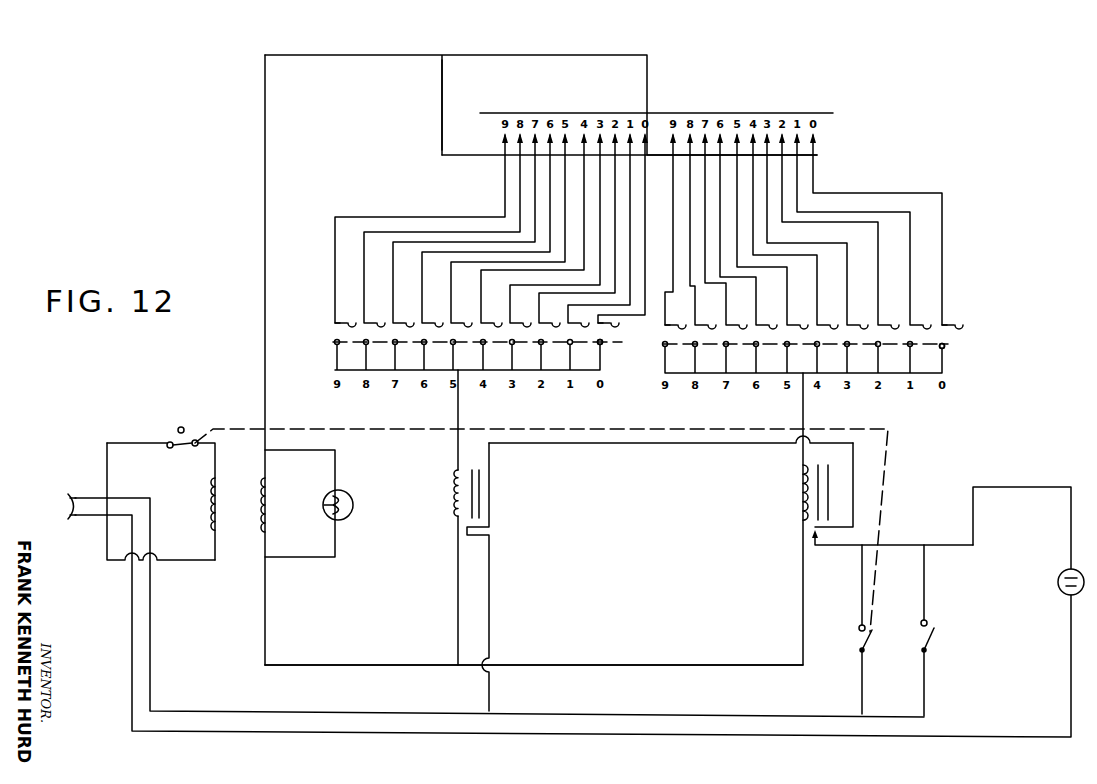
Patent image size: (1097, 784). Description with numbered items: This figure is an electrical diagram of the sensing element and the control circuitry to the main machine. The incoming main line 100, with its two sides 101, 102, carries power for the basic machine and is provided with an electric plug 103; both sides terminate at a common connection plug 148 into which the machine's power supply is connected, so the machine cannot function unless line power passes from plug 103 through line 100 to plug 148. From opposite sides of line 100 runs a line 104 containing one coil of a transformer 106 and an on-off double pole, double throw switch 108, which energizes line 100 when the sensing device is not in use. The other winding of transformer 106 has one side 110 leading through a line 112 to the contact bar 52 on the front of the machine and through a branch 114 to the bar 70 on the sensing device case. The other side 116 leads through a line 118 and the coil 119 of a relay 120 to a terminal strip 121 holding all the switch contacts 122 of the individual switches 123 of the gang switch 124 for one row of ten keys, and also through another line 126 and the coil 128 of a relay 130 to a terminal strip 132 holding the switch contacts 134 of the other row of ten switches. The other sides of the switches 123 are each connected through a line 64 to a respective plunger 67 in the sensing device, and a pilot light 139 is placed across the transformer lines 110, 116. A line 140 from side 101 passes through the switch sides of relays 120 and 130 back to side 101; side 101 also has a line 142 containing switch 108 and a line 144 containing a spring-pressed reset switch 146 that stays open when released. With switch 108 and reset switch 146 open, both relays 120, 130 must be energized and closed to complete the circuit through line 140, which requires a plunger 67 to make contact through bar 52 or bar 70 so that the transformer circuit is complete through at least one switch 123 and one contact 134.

The line 112 is at (488, 57).
The branch 114 is at (442, 118).
The contact bar 52 is at (688, 113).
The plunger 67 is at (818, 141).
The bar 70 is at (818, 156).
The line 64 is at (942, 246).
The individual switch 123 is at (335, 324).
The switch contact 134 is at (947, 346).
The gang switch 124 is at (948, 371).
The switch contact 122 is at (604, 344).
The terminal strip 132 is at (914, 378).
The terminal strip 121 is at (528, 378).
The line 126 is at (803, 616).
The side 110 is at (265, 413).
The other side 116 is at (559, 550).
The transformer 106 is at (277, 524).
The pilot light 139 is at (346, 518).
The on-off double pole double throw switch 108 is at (860, 647).
The line 104 is at (175, 561).
The main line 100 is at (88, 493).
The electric plug 103 is at (70, 513).
The side 101 is at (598, 712).
The side 102 is at (622, 742).
The coil 119 is at (455, 498).
The relay 120 is at (481, 503).
The line 118 is at (458, 621).
The line 140 is at (895, 462).
The coil 128 is at (800, 505).
The relay 130 is at (798, 483).
The line 142 is at (863, 691).
The line 144 is at (925, 669).
The reset switch 146 is at (934, 639).
The common connection plug 148 is at (1058, 576).